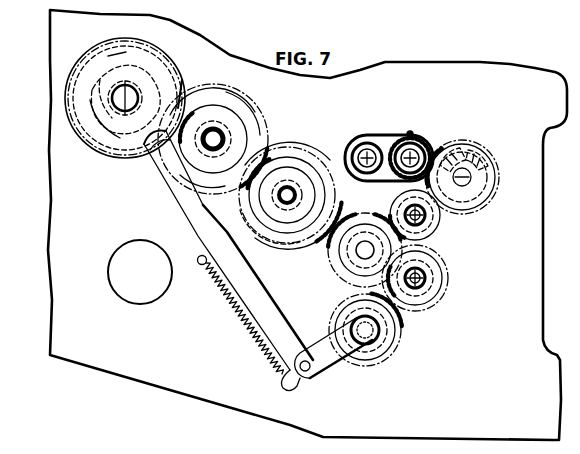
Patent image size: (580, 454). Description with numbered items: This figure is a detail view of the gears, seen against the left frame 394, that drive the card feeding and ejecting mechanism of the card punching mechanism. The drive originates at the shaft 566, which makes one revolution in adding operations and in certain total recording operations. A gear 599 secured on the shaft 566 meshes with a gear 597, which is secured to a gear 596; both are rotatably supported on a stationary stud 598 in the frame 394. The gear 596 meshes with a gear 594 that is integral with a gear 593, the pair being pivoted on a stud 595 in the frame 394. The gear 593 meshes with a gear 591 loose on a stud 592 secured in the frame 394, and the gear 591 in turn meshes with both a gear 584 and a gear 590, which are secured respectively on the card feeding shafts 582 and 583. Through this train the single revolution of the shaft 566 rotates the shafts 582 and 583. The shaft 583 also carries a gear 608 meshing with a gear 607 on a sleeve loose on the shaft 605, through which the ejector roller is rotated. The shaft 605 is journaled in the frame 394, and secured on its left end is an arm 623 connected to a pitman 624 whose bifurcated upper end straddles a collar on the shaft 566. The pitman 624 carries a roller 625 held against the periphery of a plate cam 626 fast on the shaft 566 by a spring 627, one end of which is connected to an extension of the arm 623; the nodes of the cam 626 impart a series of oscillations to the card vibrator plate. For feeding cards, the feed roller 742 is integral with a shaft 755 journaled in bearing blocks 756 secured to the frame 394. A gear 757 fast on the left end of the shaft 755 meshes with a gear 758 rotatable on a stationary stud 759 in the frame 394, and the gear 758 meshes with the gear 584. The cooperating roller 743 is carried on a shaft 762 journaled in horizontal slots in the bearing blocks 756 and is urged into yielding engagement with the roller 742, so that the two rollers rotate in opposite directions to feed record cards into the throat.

The left frame 394 is at (538, 252).
The shaft 566 is at (118, 113).
The shaft 582 is at (439, 232).
The shaft 583 is at (425, 279).
The gear 584 is at (437, 235).
The gear 590 is at (436, 262).
The gear 591 is at (340, 270).
The stud 592 is at (365, 241).
The gear 593 is at (323, 252).
The gear 594 is at (254, 243).
The stud 595 is at (290, 203).
The gear 596 is at (266, 137).
The gear 597 is at (198, 105).
The stationary stud 598 is at (214, 139).
The gear 599 is at (182, 80).
The shaft 605 is at (378, 345).
The gear 607 is at (398, 332).
The gear 608 is at (432, 308).
The arm 623 is at (332, 368).
The pitman 624 is at (193, 218).
The roller 625 is at (160, 172).
The plate cam 626 is at (110, 161).
The spring 627 is at (228, 298).
The feed roller 742 is at (398, 141).
The roller 743 is at (366, 142).
The shaft 755 is at (430, 150).
The bearing block 756 is at (389, 135).
The gear 757 is at (433, 155).
The gear 758 is at (476, 151).
The stationary stud 759 is at (473, 179).
The shaft 762 is at (360, 141).